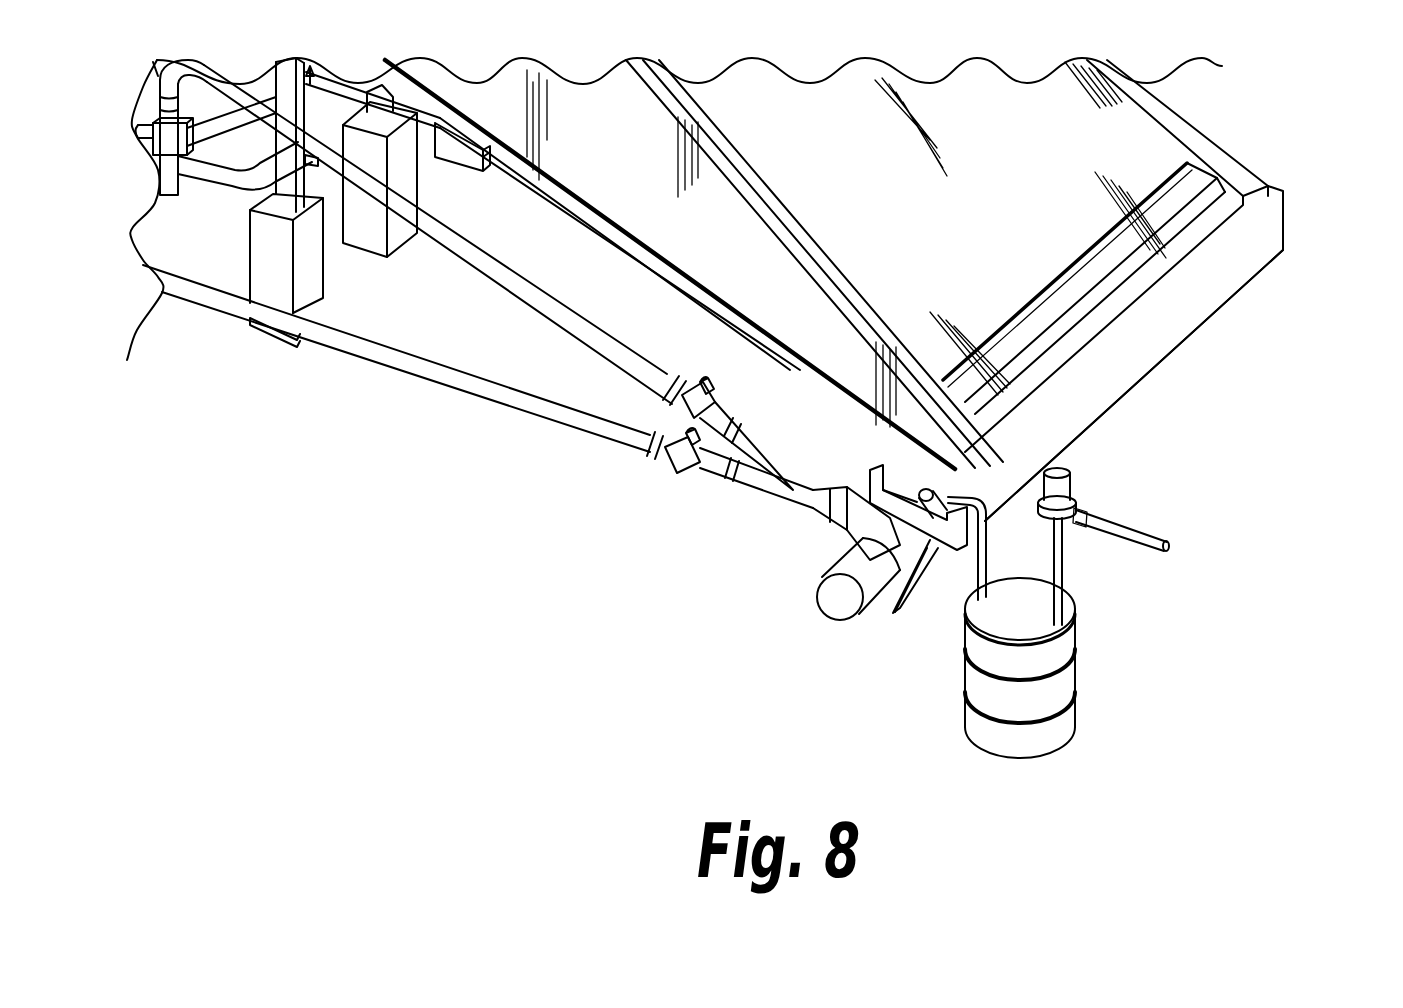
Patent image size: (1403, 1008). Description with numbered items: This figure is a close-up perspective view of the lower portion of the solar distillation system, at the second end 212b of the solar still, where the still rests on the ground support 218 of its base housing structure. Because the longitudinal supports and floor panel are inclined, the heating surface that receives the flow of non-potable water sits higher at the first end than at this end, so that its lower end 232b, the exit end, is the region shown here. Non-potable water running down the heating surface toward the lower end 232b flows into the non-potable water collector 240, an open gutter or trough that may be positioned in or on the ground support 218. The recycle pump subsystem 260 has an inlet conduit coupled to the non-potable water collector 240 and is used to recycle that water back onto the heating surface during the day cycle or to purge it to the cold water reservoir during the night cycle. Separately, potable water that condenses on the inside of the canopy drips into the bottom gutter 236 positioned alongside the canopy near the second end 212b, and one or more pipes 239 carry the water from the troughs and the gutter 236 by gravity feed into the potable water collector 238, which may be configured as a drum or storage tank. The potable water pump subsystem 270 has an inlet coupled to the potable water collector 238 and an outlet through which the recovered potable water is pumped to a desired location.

The second end 212b is at (797, 623).
The ground support 218 is at (1197, 330).
The lower end 232b is at (839, 290).
The bottom gutter 236 is at (1143, 190).
The potable water collector 238 is at (1076, 668).
The pipes 239 is at (735, 348).
The non-potable water collector 240 is at (870, 468).
The recycle pump subsystem 260 is at (838, 625).
The potable water pump subsystem 270 is at (1112, 500).